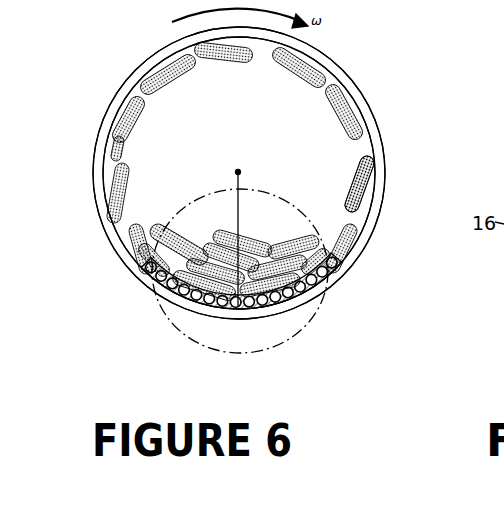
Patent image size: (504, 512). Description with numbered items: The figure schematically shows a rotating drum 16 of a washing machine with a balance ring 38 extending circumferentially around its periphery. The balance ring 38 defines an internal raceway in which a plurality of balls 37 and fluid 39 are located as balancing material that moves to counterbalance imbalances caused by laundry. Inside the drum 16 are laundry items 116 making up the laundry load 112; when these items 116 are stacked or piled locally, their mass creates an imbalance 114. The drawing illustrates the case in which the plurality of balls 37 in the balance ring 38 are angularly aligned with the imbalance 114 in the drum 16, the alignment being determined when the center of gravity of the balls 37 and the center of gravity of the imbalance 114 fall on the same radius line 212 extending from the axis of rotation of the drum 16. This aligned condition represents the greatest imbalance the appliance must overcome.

The drum 16 is at (350, 117).
The balance ring 38 is at (385, 163).
The fluid 39 is at (348, 250).
The balls 37 is at (312, 312).
The imbalance 114 is at (270, 351).
The radius line 212 is at (236, 203).
The laundry items 116 is at (137, 243).
The laundry load 112 is at (370, 196).